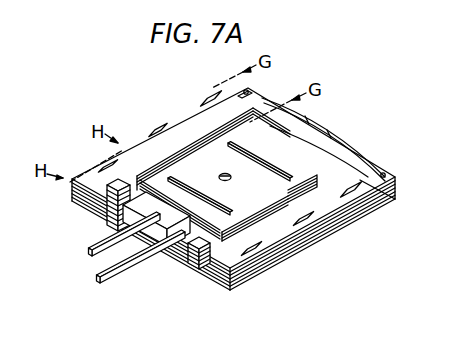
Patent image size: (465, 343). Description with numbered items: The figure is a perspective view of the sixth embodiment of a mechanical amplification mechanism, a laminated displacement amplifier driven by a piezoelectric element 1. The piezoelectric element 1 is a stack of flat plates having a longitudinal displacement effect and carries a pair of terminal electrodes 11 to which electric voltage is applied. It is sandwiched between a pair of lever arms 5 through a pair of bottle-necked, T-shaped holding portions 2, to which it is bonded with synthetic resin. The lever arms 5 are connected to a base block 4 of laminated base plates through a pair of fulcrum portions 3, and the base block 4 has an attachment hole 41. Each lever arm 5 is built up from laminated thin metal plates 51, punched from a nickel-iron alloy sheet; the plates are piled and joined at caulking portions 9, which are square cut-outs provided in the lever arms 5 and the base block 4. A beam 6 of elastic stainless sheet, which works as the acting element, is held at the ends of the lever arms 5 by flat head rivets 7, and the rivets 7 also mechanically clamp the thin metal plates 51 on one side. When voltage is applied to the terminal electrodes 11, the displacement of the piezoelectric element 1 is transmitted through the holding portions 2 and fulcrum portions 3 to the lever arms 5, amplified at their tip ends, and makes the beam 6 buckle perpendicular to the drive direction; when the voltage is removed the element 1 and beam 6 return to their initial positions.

The piezoelectric element 1 is at (178, 246).
The holding portion 2 is at (115, 212).
The fulcrum portion 3 is at (140, 172).
The base block 4 is at (283, 163).
The lever arm 5 is at (178, 118).
The beam 6 is at (348, 148).
The flat head rivet 7 is at (250, 90).
The caulking portion 9 is at (157, 126).
The terminal electrode 11 is at (98, 278).
The attachment hole 41 is at (218, 176).
The thin metal plate 51 is at (387, 198).